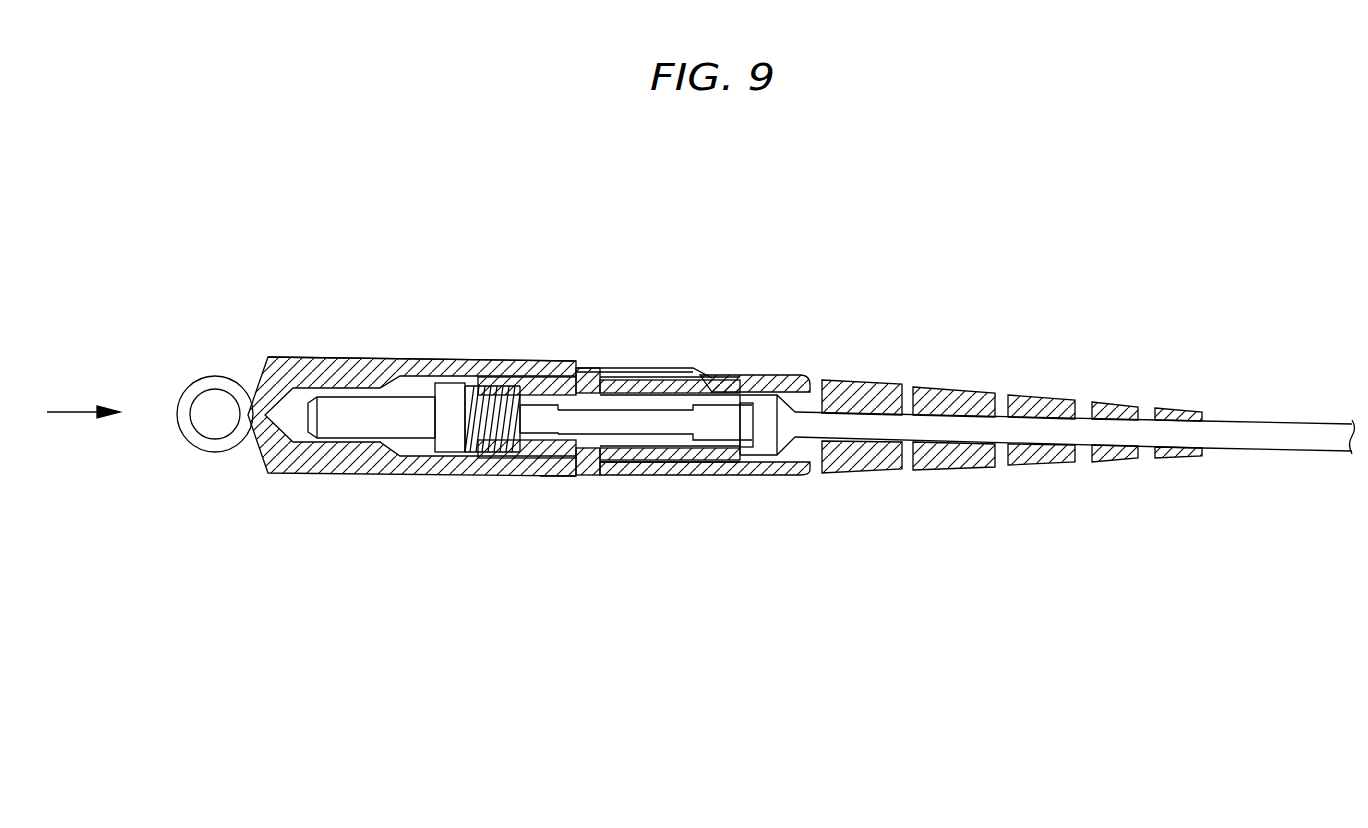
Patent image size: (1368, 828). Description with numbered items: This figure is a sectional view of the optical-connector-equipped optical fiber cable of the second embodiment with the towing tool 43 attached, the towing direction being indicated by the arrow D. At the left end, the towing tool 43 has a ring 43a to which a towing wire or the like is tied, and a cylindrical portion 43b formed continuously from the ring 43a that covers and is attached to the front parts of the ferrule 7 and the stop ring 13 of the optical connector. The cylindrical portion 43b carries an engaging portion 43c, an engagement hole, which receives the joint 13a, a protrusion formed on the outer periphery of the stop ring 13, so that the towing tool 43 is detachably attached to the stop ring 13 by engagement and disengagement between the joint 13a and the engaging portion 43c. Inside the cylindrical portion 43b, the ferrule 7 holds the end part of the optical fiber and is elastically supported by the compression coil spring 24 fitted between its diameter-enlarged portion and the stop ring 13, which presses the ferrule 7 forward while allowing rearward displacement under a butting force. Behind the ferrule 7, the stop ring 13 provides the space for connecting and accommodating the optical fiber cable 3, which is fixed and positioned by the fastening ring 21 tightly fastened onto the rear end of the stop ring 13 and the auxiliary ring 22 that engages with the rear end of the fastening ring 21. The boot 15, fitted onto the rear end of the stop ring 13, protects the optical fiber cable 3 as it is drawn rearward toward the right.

The optical fiber cable 3 is at (1273, 441).
The ferrule 7 is at (326, 430).
The stop ring 13 is at (645, 469).
The joint 13a is at (533, 479).
The boot 15 is at (875, 461).
The fastening ring 21 is at (688, 473).
The auxiliary ring 22 is at (725, 477).
The compression coil spring 24 is at (498, 478).
The towing tool 43 is at (430, 478).
The ring 43a is at (218, 374).
The cylindrical portion 43b is at (420, 361).
The engaging portion 43c is at (567, 478).
The direction arrow D is at (83, 398).